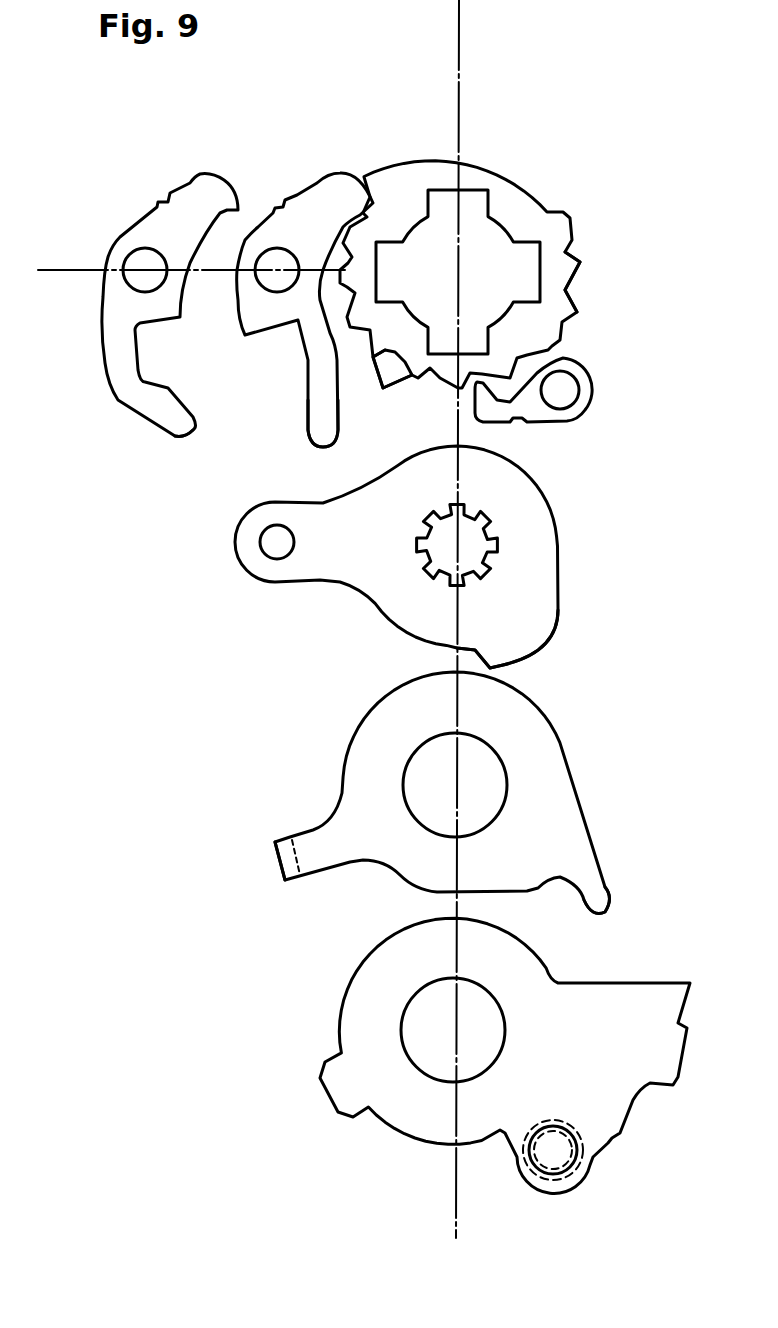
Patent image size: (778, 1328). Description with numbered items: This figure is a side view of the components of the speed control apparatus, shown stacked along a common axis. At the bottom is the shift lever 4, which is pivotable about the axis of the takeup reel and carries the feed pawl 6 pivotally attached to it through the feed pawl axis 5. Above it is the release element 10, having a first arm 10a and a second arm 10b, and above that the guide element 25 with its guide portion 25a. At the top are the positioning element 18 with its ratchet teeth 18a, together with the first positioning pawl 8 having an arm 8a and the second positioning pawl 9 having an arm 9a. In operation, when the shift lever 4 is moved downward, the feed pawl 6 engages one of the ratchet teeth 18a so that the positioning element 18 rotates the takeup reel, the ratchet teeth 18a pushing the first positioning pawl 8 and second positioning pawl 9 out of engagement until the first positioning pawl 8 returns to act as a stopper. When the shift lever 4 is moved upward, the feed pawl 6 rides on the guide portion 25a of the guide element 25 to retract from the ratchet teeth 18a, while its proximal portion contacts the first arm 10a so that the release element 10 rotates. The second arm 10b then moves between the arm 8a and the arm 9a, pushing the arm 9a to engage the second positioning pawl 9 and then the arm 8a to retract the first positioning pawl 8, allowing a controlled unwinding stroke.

The shift lever 4 is at (665, 984).
The feed pawl axis 5 is at (558, 1140).
The feed pawl 6 is at (557, 410).
The first positioning pawl 8 is at (322, 187).
The arm of the first positioning pawl 8a is at (318, 403).
The second positioning pawl 9 is at (200, 183).
The arm of the second positioning pawl 9a is at (178, 437).
The release element 10 is at (550, 745).
The first arm of the release element 10a is at (605, 890).
The second arm of the release element 10b is at (283, 861).
The positioning element 18 is at (530, 202).
The ratchet teeth 18a is at (578, 312).
The guide element 25 is at (382, 600).
The guide portion 25a is at (533, 647).